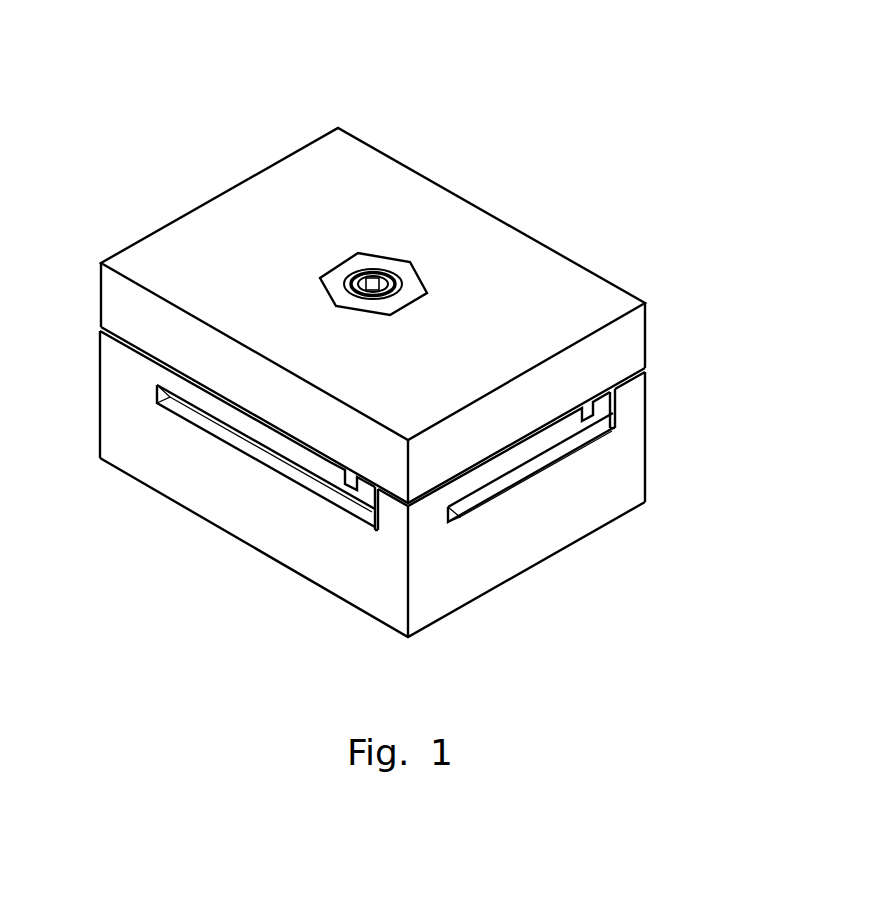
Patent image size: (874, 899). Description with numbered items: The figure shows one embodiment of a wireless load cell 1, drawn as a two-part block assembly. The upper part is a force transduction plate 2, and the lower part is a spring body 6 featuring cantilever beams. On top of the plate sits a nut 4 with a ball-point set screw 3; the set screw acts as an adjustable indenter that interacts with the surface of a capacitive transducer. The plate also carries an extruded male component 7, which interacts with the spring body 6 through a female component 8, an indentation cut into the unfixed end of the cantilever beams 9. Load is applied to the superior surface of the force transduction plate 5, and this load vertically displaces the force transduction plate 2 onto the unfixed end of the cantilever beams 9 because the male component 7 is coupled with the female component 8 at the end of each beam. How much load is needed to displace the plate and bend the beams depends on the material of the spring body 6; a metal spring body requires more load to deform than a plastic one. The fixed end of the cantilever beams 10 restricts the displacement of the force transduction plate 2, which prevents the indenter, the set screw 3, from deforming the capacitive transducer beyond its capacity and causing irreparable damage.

The wireless load cell 1 is at (532, 38).
The force transduction plate 2 is at (530, 189).
The ball-point set screw 3 is at (352, 297).
The nut 4 is at (338, 277).
The superior surface of the force transduction plate 5 is at (536, 298).
The spring body 6 is at (191, 555).
The extruded male component 7 is at (592, 403).
The female component 8 is at (576, 418).
The unfixed end of the cantilever beams 9 is at (367, 495).
The fixed end of the cantilever beams 10 is at (420, 518).